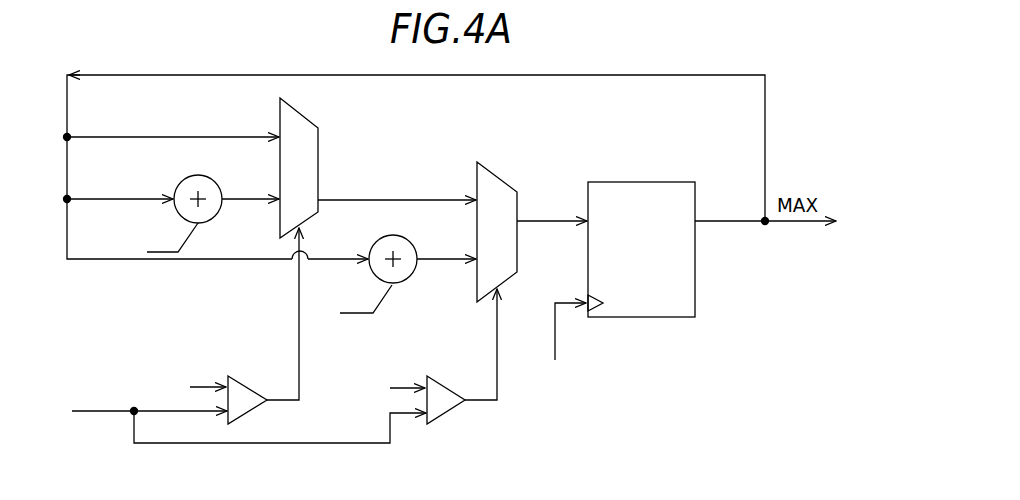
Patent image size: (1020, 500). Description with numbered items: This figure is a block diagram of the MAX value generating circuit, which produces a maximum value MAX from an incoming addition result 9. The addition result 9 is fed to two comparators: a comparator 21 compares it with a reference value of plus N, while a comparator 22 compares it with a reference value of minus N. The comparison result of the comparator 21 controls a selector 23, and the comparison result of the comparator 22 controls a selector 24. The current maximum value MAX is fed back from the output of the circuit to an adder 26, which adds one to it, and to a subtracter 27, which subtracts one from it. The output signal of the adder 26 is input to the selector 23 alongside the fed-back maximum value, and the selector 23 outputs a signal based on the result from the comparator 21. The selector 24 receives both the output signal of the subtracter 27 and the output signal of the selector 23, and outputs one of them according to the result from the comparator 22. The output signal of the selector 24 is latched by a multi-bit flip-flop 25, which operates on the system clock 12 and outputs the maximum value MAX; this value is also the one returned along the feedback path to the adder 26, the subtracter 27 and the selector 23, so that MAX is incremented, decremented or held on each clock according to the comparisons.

The addition result 9 is at (95, 410).
The system clock 12 is at (554, 350).
The comparator 21 is at (243, 376).
The comparator 22 is at (446, 416).
The selector 23 is at (318, 140).
The selector 24 is at (500, 178).
The multi-bit flip-flop 25 is at (670, 182).
The adder 26 is at (216, 184).
The subtracter 27 is at (411, 243).